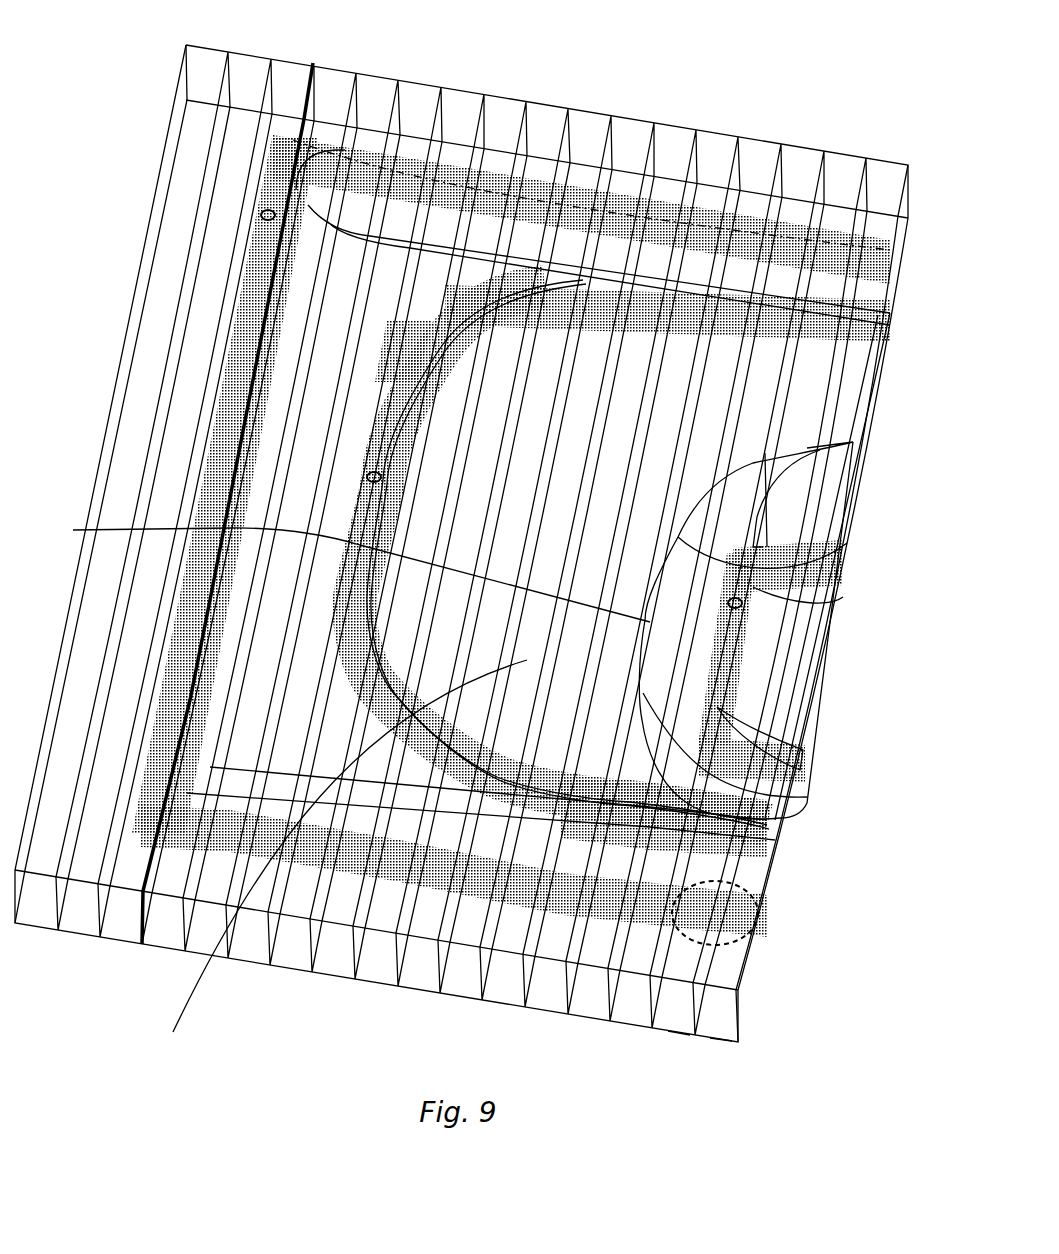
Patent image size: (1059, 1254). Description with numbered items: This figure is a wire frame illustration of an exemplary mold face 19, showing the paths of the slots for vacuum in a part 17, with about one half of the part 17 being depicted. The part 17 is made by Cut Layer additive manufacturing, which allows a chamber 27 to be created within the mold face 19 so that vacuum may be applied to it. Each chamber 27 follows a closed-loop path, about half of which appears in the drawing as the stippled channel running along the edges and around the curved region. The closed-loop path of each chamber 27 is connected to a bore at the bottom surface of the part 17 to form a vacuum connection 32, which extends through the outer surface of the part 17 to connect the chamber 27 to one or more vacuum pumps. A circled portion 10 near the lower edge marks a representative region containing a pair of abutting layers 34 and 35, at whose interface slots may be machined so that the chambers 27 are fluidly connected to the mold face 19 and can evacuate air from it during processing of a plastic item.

The part 17 is at (668, 90).
The chamber 27 is at (240, 330).
The vacuum connection 32 is at (261, 216).
The mold face 19 is at (338, 861).
The portion 10 is at (760, 917).
The layer 34 is at (678, 1027).
The layer 35 is at (720, 1027).